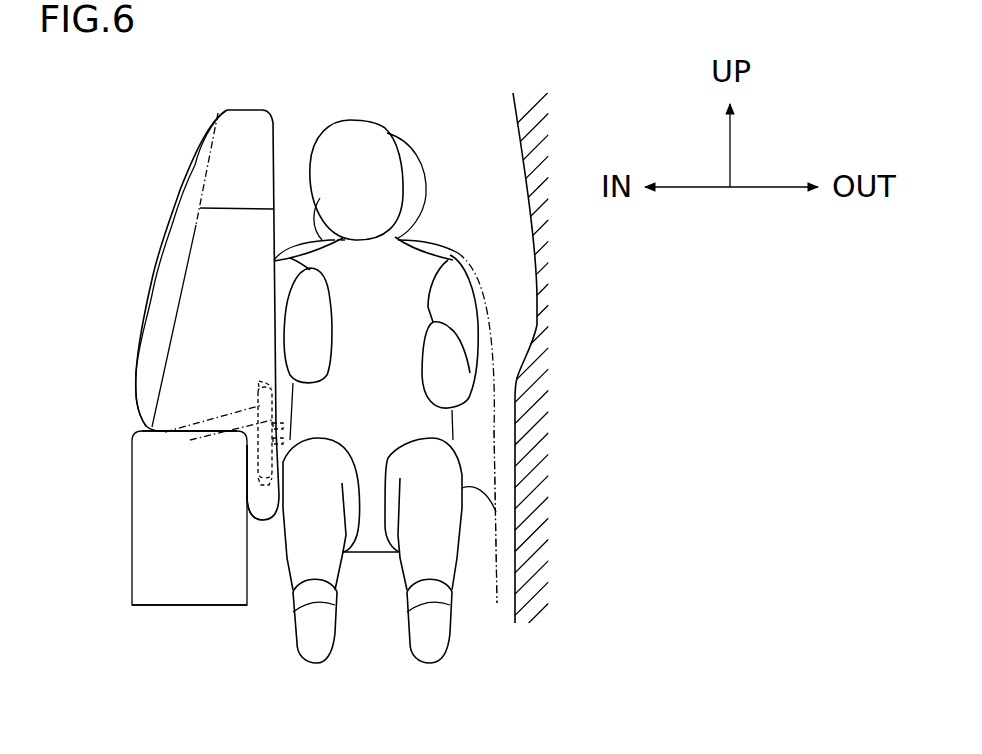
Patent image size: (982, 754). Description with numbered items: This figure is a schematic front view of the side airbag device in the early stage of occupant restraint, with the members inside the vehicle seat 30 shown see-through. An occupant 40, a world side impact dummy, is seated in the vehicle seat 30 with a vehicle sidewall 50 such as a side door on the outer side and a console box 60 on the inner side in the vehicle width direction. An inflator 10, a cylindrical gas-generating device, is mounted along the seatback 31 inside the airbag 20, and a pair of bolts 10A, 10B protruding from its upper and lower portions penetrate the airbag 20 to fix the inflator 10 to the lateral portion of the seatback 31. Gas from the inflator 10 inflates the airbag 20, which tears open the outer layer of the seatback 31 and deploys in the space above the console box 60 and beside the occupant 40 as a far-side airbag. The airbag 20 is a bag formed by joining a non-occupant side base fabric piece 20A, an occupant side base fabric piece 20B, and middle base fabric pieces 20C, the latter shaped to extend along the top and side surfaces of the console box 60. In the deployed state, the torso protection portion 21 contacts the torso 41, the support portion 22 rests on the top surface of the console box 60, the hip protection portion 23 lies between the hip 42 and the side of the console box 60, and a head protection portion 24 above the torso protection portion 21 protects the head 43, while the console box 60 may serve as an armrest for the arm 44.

The inflator 10 is at (133, 442).
The bolt 10A is at (240, 434).
The bolt 10B is at (253, 448).
The airbag 20 is at (181, 132).
The non-occupant side base fabric piece 20A is at (187, 200).
The occupant side base fabric piece 20B is at (200, 208).
The middle base fabric piece 20C is at (228, 250).
The torso protection portion 21 is at (200, 358).
The support portion 22 is at (193, 408).
The hip protection portion 23 is at (249, 482).
The head protection portion 24 is at (220, 168).
The vehicle seat 30 is at (497, 348).
The seatback 31 is at (482, 445).
The occupant 40 is at (265, 351).
The torso 41 is at (353, 340).
The hip 42 is at (363, 460).
The head 43 is at (347, 137).
The arm 44 is at (282, 312).
The vehicle sidewall 50 is at (537, 581).
The console box 60 is at (165, 606).